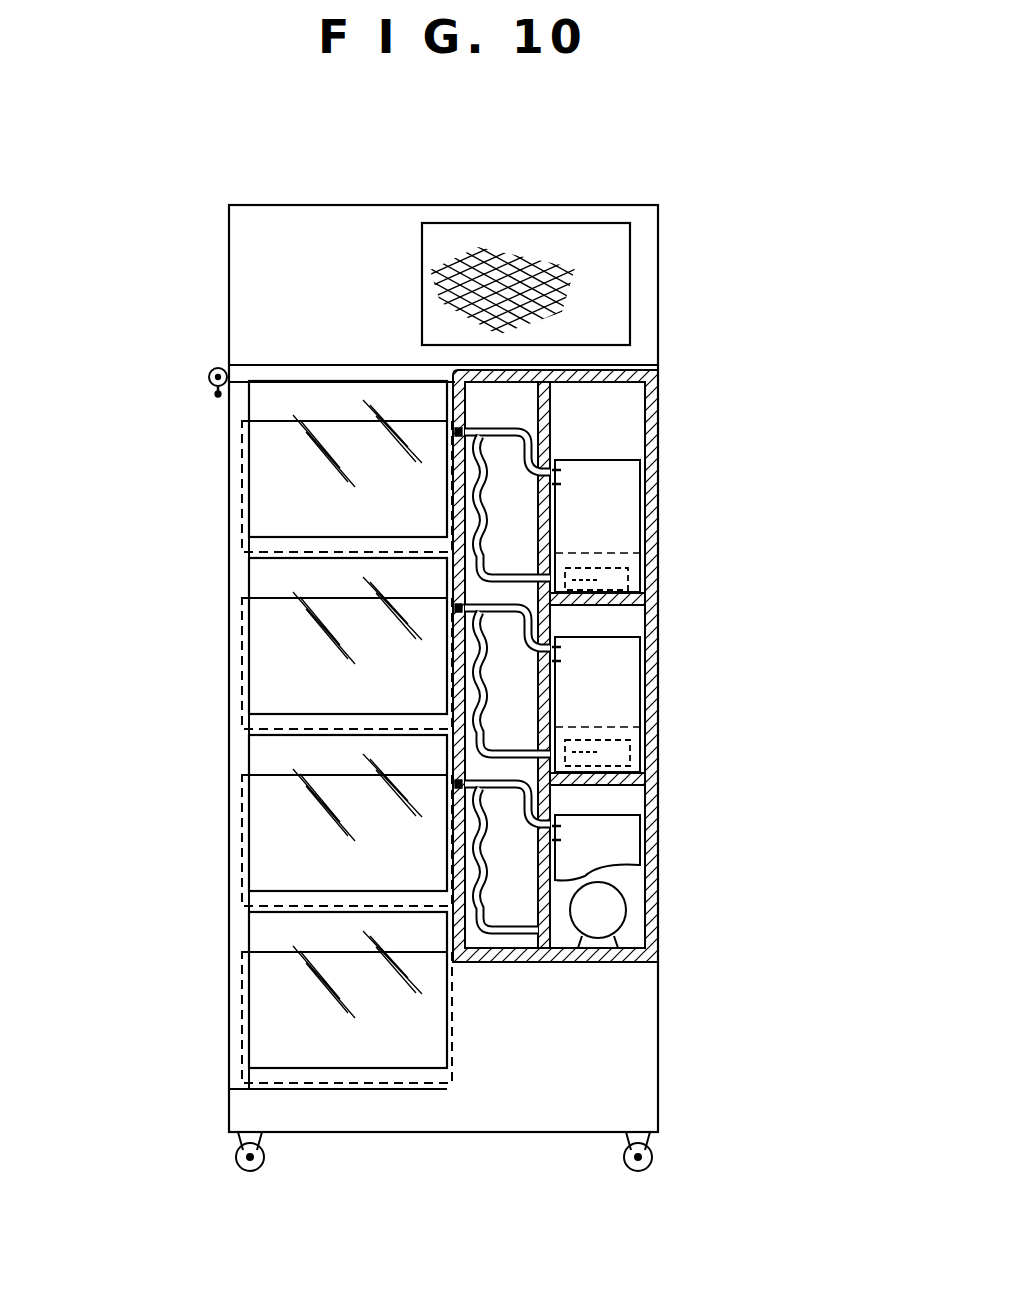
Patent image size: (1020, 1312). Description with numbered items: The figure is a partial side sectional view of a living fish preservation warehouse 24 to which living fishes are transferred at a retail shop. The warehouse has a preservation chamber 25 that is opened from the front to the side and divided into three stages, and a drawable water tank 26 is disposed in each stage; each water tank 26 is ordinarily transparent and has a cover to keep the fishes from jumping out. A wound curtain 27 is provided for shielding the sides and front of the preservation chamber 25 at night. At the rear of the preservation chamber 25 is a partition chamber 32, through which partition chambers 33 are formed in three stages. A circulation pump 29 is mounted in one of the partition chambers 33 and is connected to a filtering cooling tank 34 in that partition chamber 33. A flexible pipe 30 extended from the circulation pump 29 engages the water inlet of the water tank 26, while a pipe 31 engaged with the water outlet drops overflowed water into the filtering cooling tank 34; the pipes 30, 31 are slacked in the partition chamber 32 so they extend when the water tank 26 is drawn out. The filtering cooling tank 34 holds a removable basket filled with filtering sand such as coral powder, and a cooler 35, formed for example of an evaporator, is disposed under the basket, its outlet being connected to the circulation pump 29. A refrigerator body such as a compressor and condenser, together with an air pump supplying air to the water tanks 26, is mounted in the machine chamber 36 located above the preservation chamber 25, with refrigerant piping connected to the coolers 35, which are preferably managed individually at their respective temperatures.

The living fish preservation warehouse 24 is at (660, 422).
The preservation chamber 25 is at (262, 402).
The water tank 26 is at (262, 470).
The wound curtain 27 is at (208, 374).
The circulation pump 29 is at (605, 912).
The flexible pipe 30 is at (481, 474).
The pipe 31 is at (518, 430).
The partition chamber 32 is at (488, 393).
The partition chamber 33 is at (628, 403).
The filtering cooling tank 34 is at (622, 506).
The cooler 35 is at (600, 578).
The machine chamber 36 is at (325, 245).